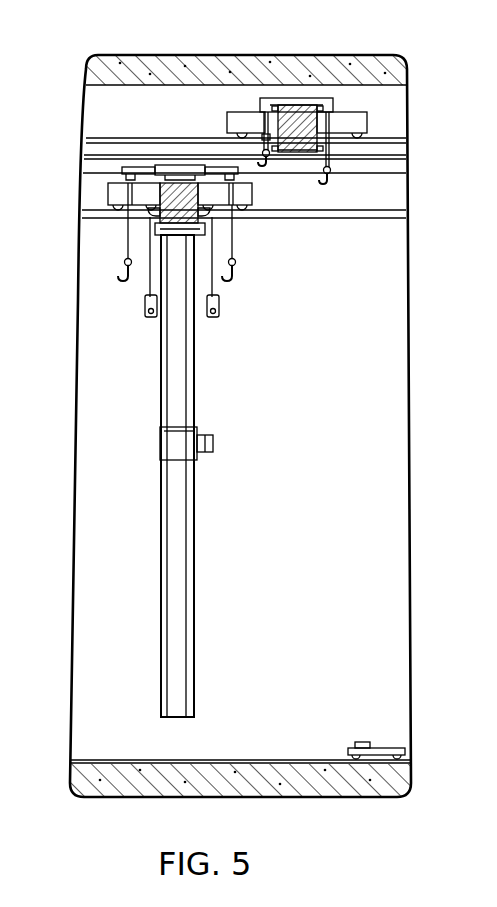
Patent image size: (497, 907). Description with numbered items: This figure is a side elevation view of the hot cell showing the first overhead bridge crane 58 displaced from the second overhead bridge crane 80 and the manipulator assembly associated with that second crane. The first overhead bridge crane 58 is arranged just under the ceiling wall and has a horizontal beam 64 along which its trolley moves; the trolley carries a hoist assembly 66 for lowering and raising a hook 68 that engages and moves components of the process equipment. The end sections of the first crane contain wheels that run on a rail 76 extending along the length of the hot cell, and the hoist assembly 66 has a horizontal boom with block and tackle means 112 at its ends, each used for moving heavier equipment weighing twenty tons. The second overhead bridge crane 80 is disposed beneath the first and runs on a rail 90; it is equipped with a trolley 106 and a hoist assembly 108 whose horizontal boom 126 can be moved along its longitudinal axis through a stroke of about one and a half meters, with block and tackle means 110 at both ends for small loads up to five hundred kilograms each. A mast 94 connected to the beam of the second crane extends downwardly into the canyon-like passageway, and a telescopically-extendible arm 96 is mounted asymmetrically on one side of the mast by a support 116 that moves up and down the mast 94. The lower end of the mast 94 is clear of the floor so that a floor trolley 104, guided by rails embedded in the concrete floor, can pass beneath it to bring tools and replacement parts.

The first overhead bridge crane 58 is at (234, 98).
The block and tackle means 112 is at (255, 118).
The horizontal beam 64 is at (297, 113).
The hoist assembly 66 is at (327, 100).
The rail 76 is at (393, 139).
The rail 90 is at (385, 211).
The hook 68 is at (324, 178).
The hoist assembly 108 is at (177, 163).
The horizontal boom 126 is at (140, 179).
The trolley 106 is at (117, 182).
The overhead bridge crane 80 is at (104, 192).
The block and tackle means 110 is at (123, 248).
The mast 94 is at (170, 596).
The support 116 is at (170, 444).
The telescopically-extendible arm 96 is at (214, 443).
The trolley 104 is at (380, 750).